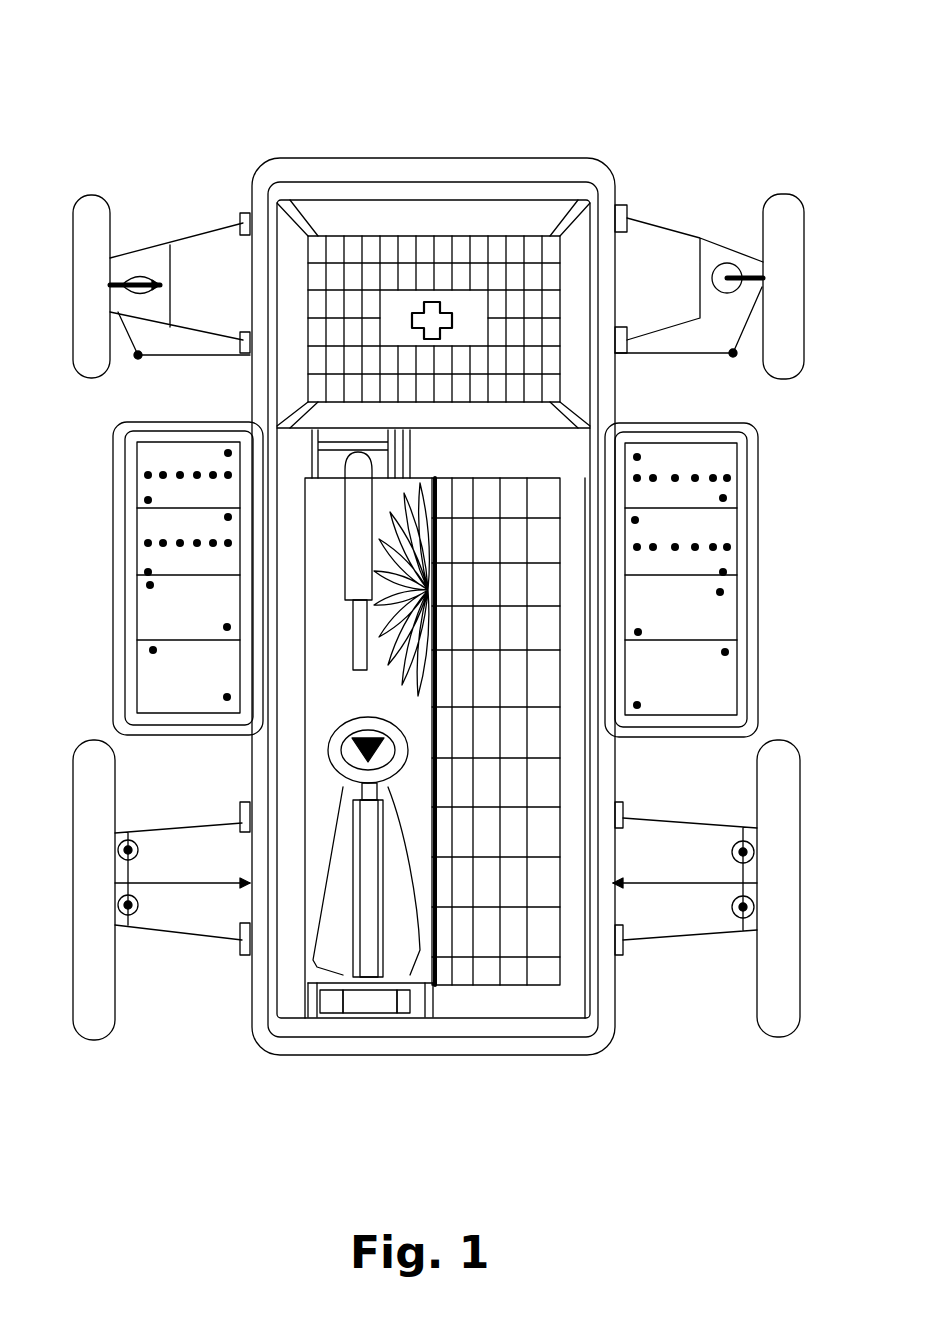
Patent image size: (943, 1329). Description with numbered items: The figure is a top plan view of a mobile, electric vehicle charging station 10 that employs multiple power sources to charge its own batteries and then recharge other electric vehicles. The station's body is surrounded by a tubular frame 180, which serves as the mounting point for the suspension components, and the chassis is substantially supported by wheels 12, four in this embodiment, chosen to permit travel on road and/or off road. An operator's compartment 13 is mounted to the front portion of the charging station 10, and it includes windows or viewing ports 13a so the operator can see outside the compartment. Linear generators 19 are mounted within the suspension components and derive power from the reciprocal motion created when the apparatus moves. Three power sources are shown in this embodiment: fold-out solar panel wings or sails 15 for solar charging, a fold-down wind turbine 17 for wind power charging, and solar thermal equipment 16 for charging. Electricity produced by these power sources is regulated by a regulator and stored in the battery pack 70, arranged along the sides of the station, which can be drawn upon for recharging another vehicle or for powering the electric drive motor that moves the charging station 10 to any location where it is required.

The mobile electric vehicle charging station 10 is at (103, 83).
The tubular frame 180 is at (280, 160).
The operator's compartment 13 is at (380, 230).
The windows or viewing ports 13a is at (507, 210).
The wheels 12 is at (792, 205).
The linear generators 19 is at (755, 260).
The solar thermal equipment 16 is at (438, 470).
The fold-out solar panel wings or sails 15 is at (487, 478).
The fold-down wind turbine 17 is at (410, 990).
The battery pack 70 is at (188, 675).